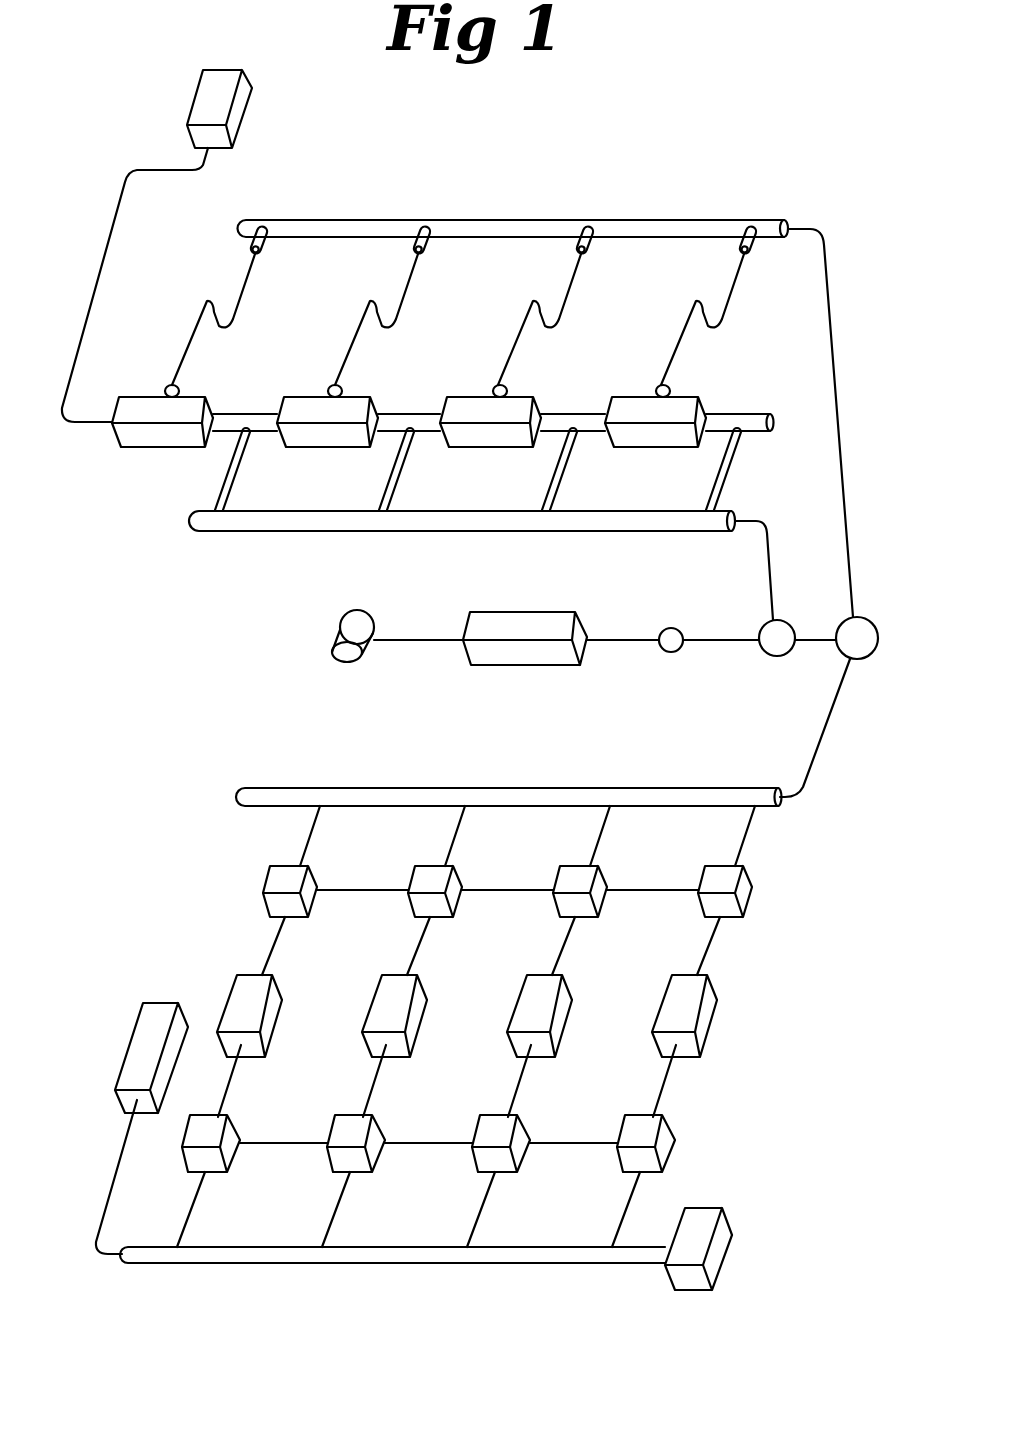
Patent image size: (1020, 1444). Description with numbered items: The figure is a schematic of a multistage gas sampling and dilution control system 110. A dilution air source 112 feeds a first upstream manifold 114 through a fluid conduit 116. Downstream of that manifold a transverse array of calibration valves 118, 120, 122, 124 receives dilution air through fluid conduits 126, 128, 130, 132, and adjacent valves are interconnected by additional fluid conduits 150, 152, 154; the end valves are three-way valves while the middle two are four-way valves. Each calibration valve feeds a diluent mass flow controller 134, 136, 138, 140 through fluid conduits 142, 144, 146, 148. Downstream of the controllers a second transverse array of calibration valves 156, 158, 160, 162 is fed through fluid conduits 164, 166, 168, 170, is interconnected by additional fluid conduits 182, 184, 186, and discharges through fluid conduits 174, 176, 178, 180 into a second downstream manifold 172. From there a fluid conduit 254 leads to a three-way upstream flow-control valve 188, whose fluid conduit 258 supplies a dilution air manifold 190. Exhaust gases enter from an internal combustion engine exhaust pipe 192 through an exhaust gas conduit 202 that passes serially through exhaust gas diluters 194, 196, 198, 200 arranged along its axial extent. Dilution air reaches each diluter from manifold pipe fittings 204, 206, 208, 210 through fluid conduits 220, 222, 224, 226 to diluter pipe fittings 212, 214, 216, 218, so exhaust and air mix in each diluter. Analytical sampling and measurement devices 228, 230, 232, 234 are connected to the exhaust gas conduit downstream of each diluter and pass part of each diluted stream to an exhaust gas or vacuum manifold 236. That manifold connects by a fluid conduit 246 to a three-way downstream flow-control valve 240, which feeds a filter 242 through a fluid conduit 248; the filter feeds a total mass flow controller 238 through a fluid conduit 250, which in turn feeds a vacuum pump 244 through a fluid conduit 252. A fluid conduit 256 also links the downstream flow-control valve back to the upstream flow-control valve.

The multistage gas sampling and dilution control system 110 is at (770, 172).
The dilution air source 112 is at (158, 1025).
The first upstream manifold 114 is at (370, 1265).
The fluid conduit 116 is at (112, 1182).
The calibration valve 118 is at (230, 1152).
The calibration valve 120 is at (375, 1152).
The calibration valve 122 is at (520, 1152).
The calibration valve 124 is at (660, 1152).
The fluid conduit 126 is at (188, 1222).
The fluid conduit 128 is at (333, 1222).
The fluid conduit 130 is at (478, 1222).
The fluid conduit 132 is at (622, 1215).
The diluent mass flow controller 134 is at (273, 1008).
The diluent mass flow controller 136 is at (418, 1008).
The diluent mass flow controller 138 is at (563, 1008).
The diluent mass flow controller 140 is at (708, 1008).
The fluid conduit 142 is at (224, 1100).
The fluid conduit 144 is at (369, 1100).
The fluid conduit 146 is at (514, 1100).
The fluid conduit 148 is at (659, 1100).
The additional fluid conduit 150 is at (255, 1143).
The additional fluid conduit 152 is at (400, 1143).
The additional fluid conduit 154 is at (545, 1143).
The calibration valve 156 is at (308, 897).
The calibration valve 158 is at (453, 897).
The calibration valve 160 is at (598, 897).
The calibration valve 162 is at (743, 897).
The fluid conduit 164 is at (280, 932).
The fluid conduit 166 is at (425, 932).
The fluid conduit 168 is at (570, 932).
The fluid conduit 170 is at (715, 932).
The second downstream manifold 172 is at (517, 788).
The fluid conduit 174 is at (307, 843).
The fluid conduit 176 is at (452, 843).
The fluid conduit 178 is at (597, 843).
The fluid conduit 180 is at (742, 843).
The additional fluid conduit 182 is at (334, 890).
The additional fluid conduit 184 is at (479, 890).
The additional fluid conduit 186 is at (624, 890).
The upstream flow-control valve 188 is at (846, 654).
The dilution air manifold 190 is at (516, 220).
The internal combustion engine exhaust pipe 192 is at (240, 111).
The exhaust gas diluter 194 is at (162, 437).
The exhaust gas diluter 196 is at (325, 437).
The exhaust gas diluter 198 is at (488, 437).
The exhaust gas diluter 200 is at (653, 437).
The exhaust gas conduit 202 is at (120, 224).
The pipe fitting 204 is at (262, 254).
The pipe fitting 206 is at (425, 254).
The pipe fitting 208 is at (588, 254).
The pipe fitting 210 is at (752, 254).
The pipe fitting 212 is at (170, 386).
The pipe fitting 214 is at (332, 385).
The pipe fitting 216 is at (496, 385).
The pipe fitting 218 is at (659, 385).
The fluid conduit 220 is at (209, 299).
The fluid conduit 222 is at (372, 299).
The fluid conduit 224 is at (535, 299).
The fluid conduit 226 is at (698, 299).
The analytical sampling and measurement device 228 is at (230, 470).
The analytical sampling and measurement device 230 is at (393, 470).
The analytical sampling and measurement device 232 is at (556, 470).
The analytical sampling and measurement device 234 is at (720, 470).
The exhaust gas or vacuum manifold 236 is at (325, 522).
The total mass flow controller 238 is at (520, 612).
The downstream flow-control valve 240 is at (762, 625).
The filter 242 is at (671, 627).
The vacuum pump 244 is at (357, 610).
The fluid conduit 246 is at (772, 560).
The fluid conduit 248 is at (715, 642).
The fluid conduit 250 is at (612, 642).
The fluid conduit 252 is at (413, 642).
The fluid conduit 254 is at (808, 768).
The fluid conduit 256 is at (822, 645).
The fluid conduit 258 is at (852, 380).